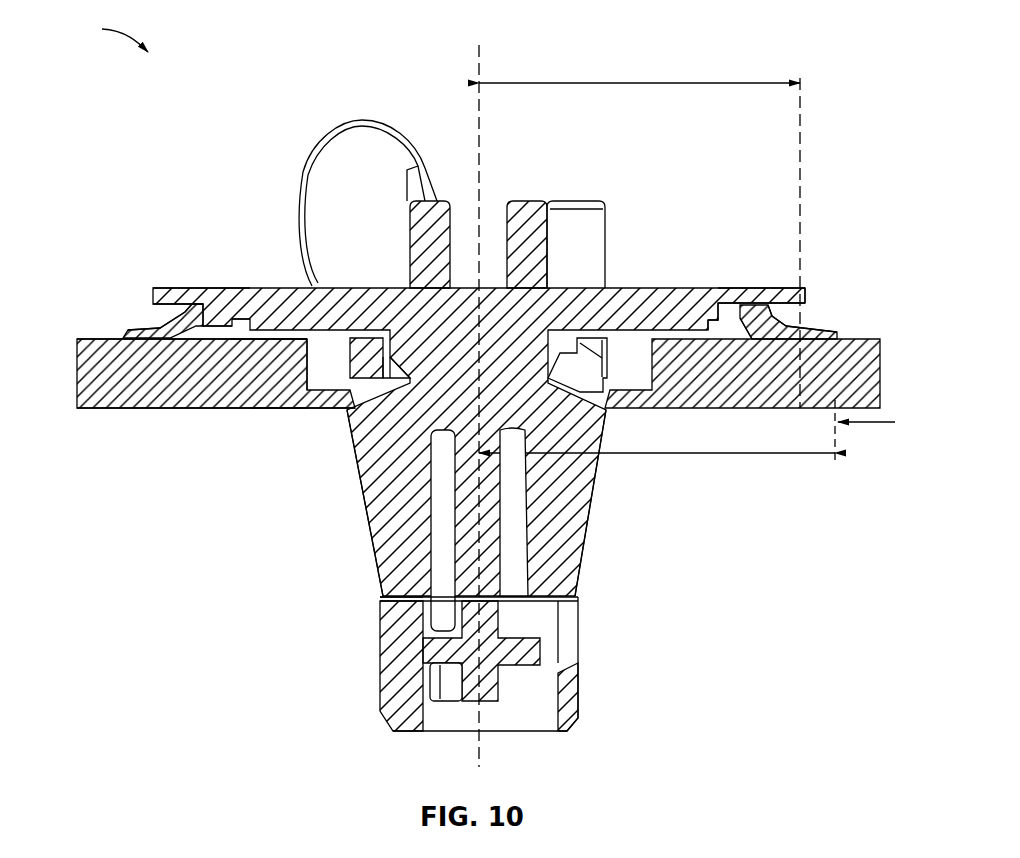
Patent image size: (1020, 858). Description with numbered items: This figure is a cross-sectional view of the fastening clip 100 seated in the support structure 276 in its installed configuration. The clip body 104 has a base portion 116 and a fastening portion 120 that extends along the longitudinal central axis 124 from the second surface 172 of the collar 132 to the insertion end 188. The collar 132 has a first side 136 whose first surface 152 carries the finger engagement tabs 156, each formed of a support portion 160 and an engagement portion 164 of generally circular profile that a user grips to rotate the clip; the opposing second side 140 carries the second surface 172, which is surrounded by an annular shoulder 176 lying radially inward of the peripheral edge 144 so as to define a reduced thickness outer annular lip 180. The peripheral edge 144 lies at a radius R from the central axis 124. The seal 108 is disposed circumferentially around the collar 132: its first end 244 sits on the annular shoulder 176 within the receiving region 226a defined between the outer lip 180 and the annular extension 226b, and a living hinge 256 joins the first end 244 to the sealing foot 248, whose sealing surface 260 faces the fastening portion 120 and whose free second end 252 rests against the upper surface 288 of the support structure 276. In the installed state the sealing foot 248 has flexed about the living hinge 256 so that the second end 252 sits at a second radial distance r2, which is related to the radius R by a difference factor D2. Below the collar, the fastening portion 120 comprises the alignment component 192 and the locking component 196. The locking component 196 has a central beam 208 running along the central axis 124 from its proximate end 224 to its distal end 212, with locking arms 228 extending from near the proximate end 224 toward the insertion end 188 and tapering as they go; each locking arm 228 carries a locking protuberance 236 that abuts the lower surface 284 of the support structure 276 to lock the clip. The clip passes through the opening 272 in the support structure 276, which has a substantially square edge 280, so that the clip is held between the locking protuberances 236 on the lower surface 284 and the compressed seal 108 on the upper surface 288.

The fastening clip 100 is at (101, 34).
The clip body 104 is at (655, 300).
The seal 108 is at (197, 323).
The base portion 116 is at (616, 178).
The fastening portion 120 is at (614, 729).
The central axis 124 is at (482, 72).
The collar 132 is at (695, 293).
The first side 136 is at (665, 260).
The second side 140 is at (230, 348).
The peripheral edge 144 is at (150, 310).
The first surface 152 is at (230, 313).
The finger engagement tabs 156 is at (380, 150).
The support portion 160 is at (598, 213).
The engagement portion 164 is at (330, 150).
The second surface 172 is at (250, 408).
The annular shoulder 176 is at (243, 307).
The reduced thickness outer annular lip 180 is at (165, 295).
The insertion end 188 is at (408, 725).
The alignment component 192 is at (402, 677).
The locking component 196 is at (560, 557).
The central beam 208 is at (392, 580).
The distal end 212 is at (487, 620).
The proximate end 224 is at (385, 510).
The receiving region 226a is at (742, 308).
The annular extension 226b is at (735, 318).
The locking arms 228 is at (385, 548).
The locking protuberance 236 is at (360, 400).
The first end 244 is at (745, 340).
The sealing foot 248 is at (807, 330).
The second end 252 is at (833, 323).
The living hinge 256 is at (186, 316).
The sealing surface 260 is at (795, 340).
The opening 272 is at (393, 376).
The support structure 276 is at (92, 375).
The square edge 280 is at (370, 393).
The lower surface 284 is at (125, 408).
The upper surface 288 is at (92, 338).
The radius R is at (670, 83).
The second radial distance r2 is at (708, 453).
The difference factor D2 is at (866, 422).